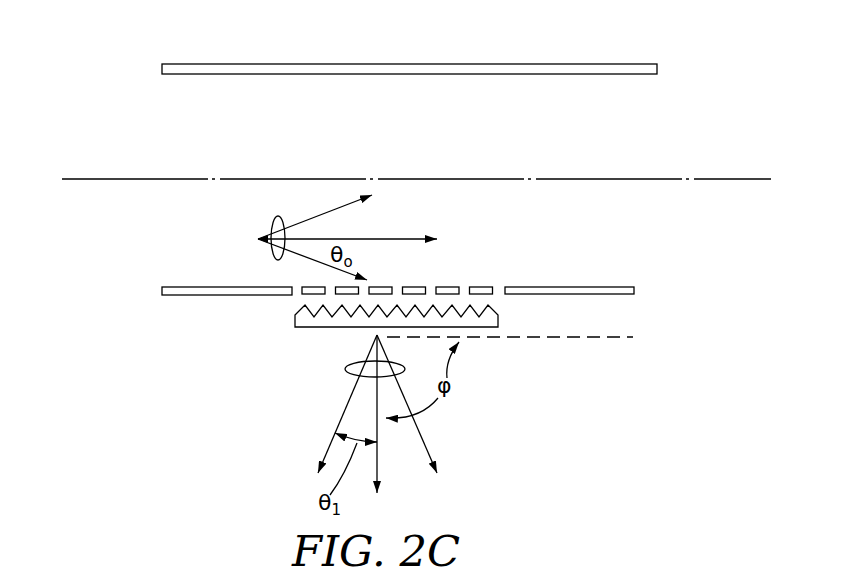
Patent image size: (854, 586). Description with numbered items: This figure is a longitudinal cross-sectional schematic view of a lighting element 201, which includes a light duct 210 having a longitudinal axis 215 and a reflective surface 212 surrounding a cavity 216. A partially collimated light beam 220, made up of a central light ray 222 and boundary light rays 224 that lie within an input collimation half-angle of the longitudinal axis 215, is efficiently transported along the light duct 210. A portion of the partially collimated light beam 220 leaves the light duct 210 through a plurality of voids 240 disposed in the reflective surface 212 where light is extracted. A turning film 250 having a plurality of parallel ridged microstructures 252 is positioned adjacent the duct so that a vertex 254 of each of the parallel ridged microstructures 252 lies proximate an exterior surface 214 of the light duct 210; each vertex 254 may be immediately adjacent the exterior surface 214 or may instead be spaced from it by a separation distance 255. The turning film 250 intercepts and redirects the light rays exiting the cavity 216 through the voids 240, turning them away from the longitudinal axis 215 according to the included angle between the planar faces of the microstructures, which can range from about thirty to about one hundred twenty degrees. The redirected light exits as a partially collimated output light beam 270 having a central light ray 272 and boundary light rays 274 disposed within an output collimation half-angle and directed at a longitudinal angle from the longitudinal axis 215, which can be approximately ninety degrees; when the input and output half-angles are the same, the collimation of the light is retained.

The lighting element 201 is at (126, 30).
The light duct 210 is at (591, 64).
The cavity 216 is at (538, 133).
The longitudinal axis 215 is at (121, 180).
The partially collimated light beam 220 is at (275, 218).
The boundary light rays 224 is at (322, 214).
The central light ray 222 is at (393, 239).
The reflective surface 212 is at (598, 287).
The exterior surface 214 is at (606, 296).
The voids 240 is at (436, 259).
The vertex 254 is at (452, 295).
The turning film 250 is at (295, 331).
The separation distance 255 is at (294, 303).
The parallel ridged microstructures 252 is at (472, 316).
The partially collimated output light beam 270 is at (357, 375).
The central light ray 272 is at (378, 452).
The boundary light rays 274 is at (423, 438).